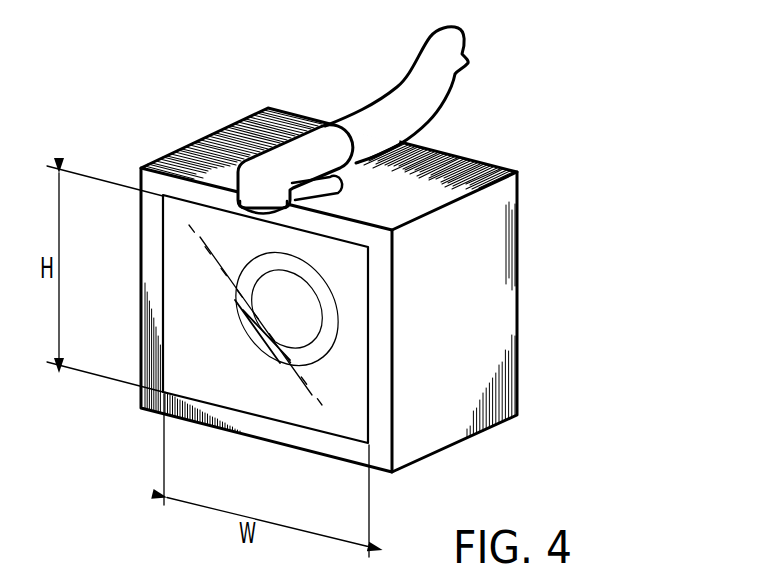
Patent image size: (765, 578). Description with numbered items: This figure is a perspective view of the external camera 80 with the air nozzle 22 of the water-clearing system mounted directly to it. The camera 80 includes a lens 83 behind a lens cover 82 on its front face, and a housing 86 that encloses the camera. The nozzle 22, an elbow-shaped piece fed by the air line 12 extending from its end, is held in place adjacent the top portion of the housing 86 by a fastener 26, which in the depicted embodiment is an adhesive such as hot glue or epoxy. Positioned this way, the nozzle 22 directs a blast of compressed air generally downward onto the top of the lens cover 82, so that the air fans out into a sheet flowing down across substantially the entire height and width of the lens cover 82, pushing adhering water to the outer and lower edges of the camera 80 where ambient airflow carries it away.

The air line 12 is at (458, 82).
The nozzle 22 is at (246, 218).
The fastener 26 is at (351, 181).
The external camera 80 is at (391, 291).
The lens cover 82 is at (306, 334).
The lens 83 is at (255, 328).
The housing 86 is at (460, 278).